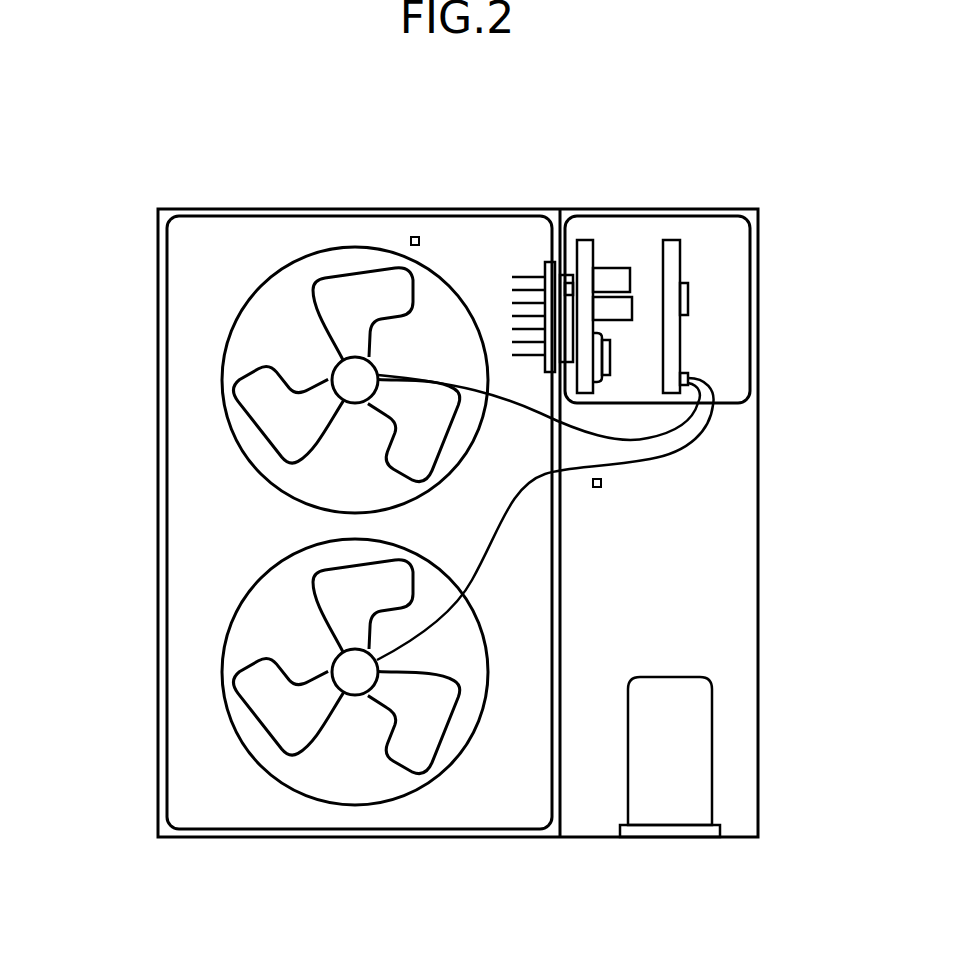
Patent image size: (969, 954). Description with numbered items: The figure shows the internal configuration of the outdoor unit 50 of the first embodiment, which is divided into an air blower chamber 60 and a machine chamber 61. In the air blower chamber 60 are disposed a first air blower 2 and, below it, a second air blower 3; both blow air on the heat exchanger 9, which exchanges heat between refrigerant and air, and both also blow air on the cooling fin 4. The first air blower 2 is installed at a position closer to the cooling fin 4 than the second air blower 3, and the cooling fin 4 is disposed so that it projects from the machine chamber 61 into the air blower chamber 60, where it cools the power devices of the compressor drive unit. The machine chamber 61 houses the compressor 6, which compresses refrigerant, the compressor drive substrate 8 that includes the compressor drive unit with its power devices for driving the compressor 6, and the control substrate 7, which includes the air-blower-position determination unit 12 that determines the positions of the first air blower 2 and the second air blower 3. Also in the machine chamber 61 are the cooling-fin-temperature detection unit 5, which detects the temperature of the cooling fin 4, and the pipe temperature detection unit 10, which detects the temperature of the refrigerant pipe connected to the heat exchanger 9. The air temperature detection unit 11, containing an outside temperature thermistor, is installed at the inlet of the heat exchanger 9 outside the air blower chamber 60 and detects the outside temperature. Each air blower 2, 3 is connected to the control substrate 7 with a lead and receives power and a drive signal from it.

The first air blower 2 is at (270, 415).
The second air blower 3 is at (270, 705).
The cooling fin 4 is at (542, 264).
The cooling-fin-temperature detection unit 5 is at (568, 271).
The compressor 6 is at (685, 725).
The control substrate 7 is at (683, 260).
The compressor drive substrate 8 is at (596, 252).
The heat exchanger 9 is at (206, 248).
The pipe temperature detection unit 10 is at (605, 483).
The air temperature detection unit 11 is at (415, 235).
The air-blower-position determination unit 12 is at (691, 297).
The outdoor unit 50 is at (612, 160).
The air blower chamber 60 is at (318, 838).
The machine chamber 61 is at (593, 838).